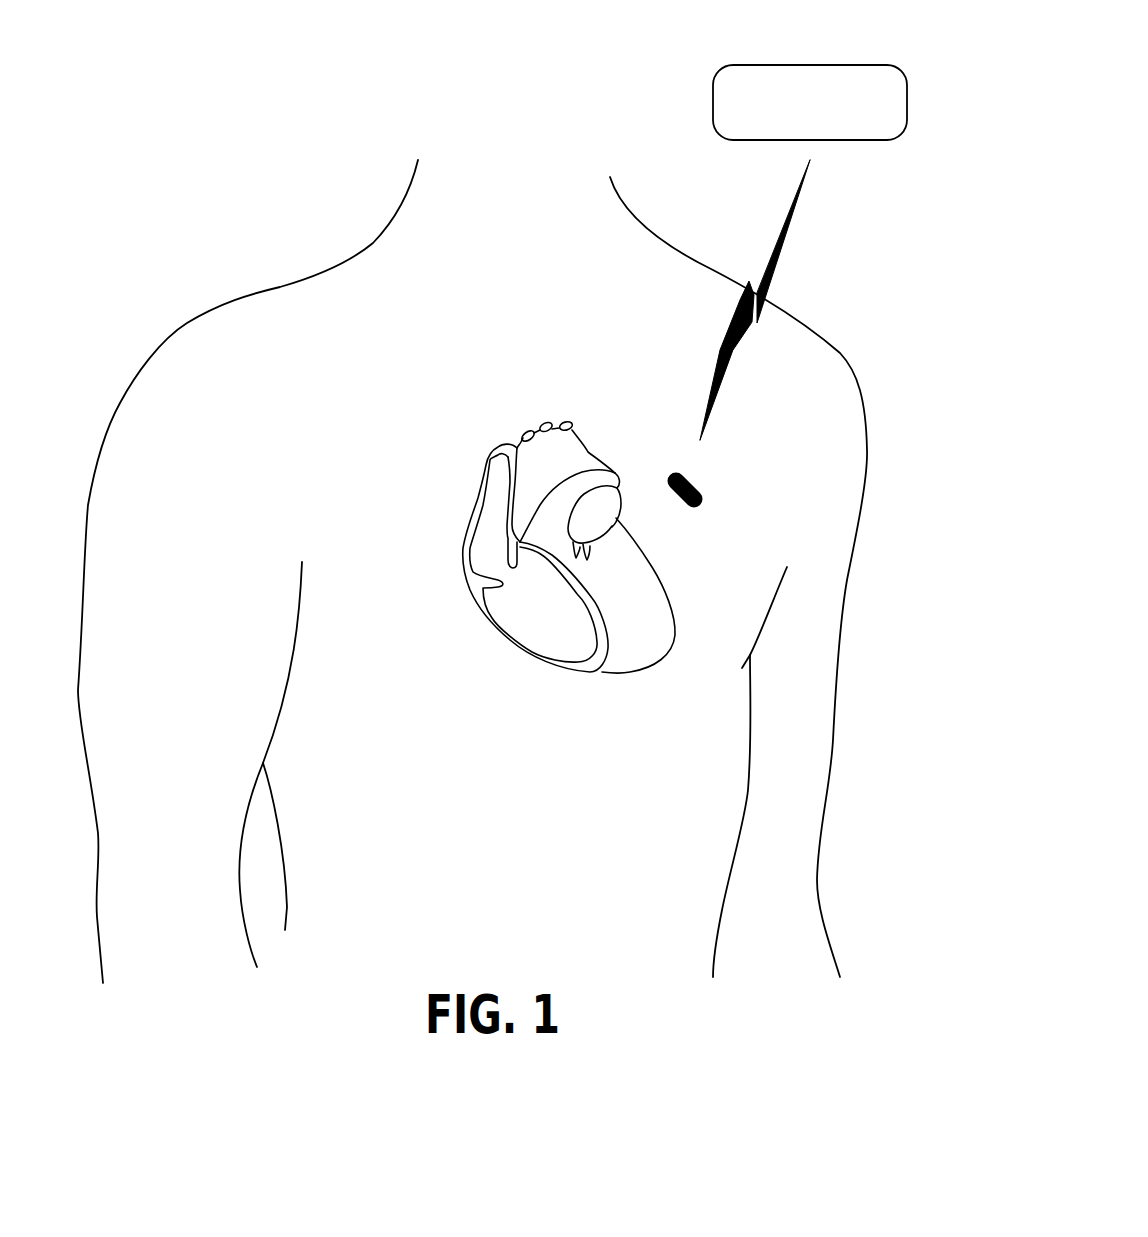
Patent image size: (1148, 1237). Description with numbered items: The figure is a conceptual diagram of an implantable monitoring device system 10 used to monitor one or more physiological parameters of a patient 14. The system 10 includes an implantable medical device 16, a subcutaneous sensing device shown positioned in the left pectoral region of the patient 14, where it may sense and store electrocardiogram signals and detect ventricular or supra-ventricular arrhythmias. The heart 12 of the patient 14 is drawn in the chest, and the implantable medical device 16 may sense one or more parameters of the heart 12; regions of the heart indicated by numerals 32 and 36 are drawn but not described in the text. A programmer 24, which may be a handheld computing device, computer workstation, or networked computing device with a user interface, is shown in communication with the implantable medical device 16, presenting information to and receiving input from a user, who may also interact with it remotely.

The implantable monitoring device system 10 is at (560, 80).
The heart 12 is at (580, 577).
The patient 14 is at (838, 352).
The implantable medical device 16 is at (670, 483).
The programmer 24 is at (797, 126).
The left ventricle 32 is at (648, 598).
The right atrium 36 is at (575, 465).